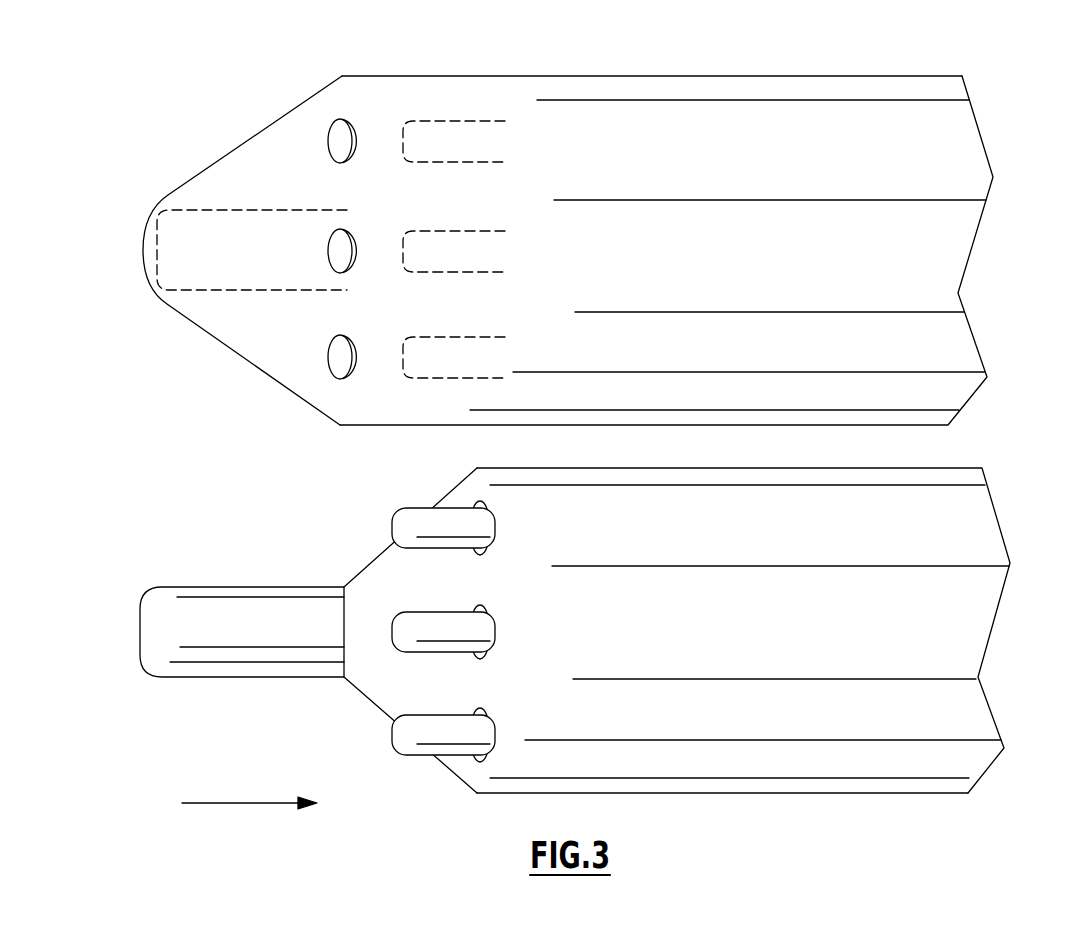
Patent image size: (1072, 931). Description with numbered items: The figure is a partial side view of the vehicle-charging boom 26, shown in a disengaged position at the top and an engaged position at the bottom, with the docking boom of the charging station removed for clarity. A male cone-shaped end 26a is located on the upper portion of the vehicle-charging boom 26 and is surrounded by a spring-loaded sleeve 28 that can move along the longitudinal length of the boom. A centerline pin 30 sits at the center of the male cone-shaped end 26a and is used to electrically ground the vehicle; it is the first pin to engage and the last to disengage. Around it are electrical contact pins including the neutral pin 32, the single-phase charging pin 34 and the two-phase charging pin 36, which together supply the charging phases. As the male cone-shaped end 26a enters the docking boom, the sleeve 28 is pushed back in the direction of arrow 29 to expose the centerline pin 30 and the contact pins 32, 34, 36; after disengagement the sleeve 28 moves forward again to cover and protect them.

The vehicle-charging boom 26 is at (591, 441).
The male cone-shaped end 26a is at (248, 140).
The sleeve 28 is at (698, 76).
The arrow 29 is at (200, 803).
The centerline pin 30 is at (224, 291).
The neutral pin 32 is at (463, 142).
The single-phase charging pin 34 is at (463, 251).
The two-phase charging pin 36 is at (463, 358).